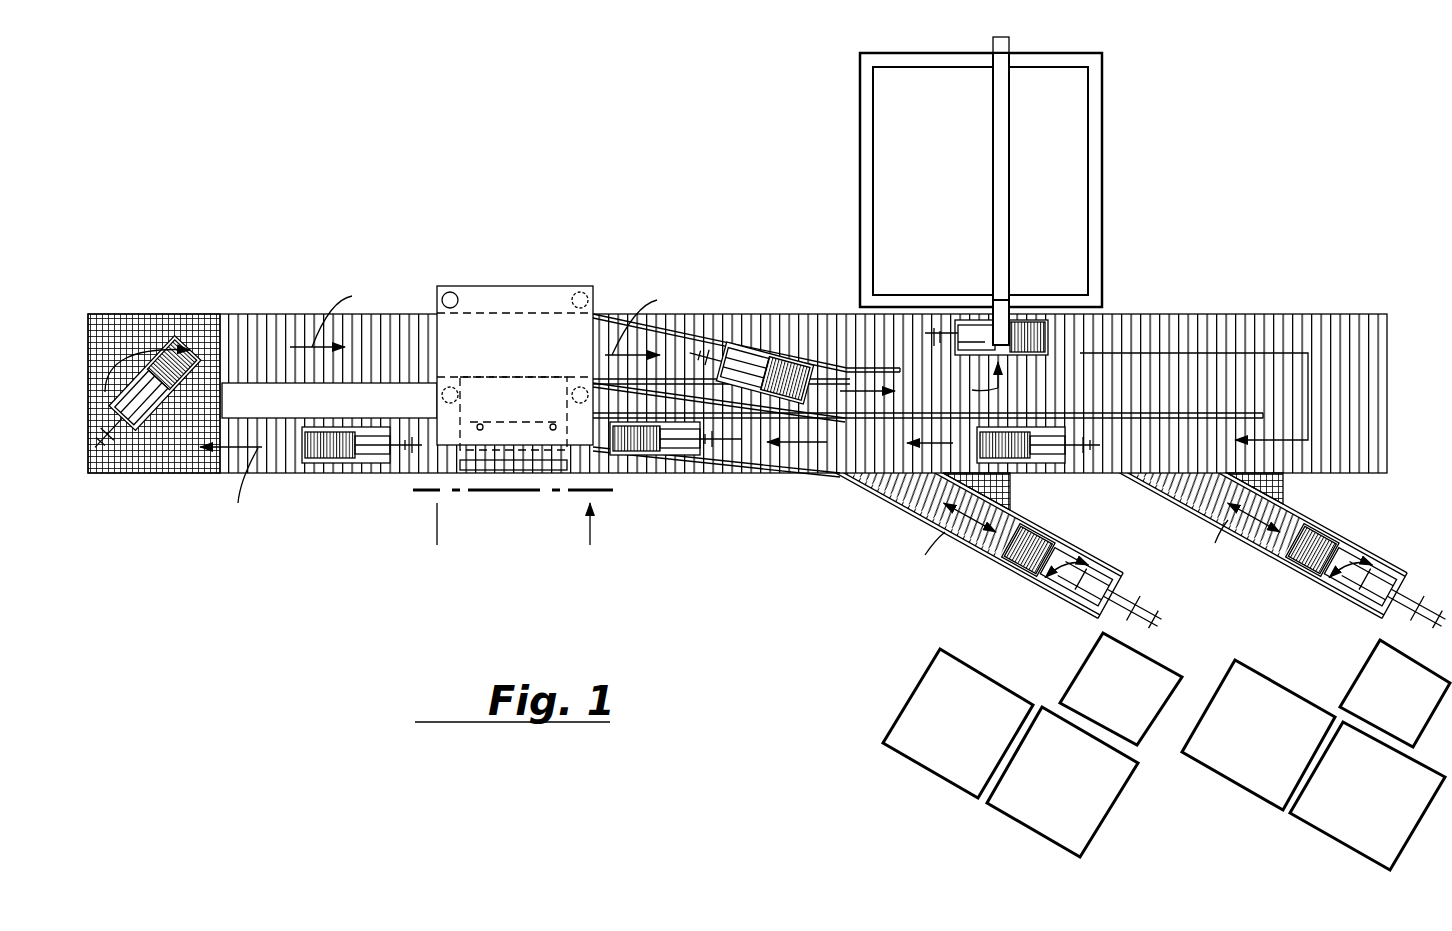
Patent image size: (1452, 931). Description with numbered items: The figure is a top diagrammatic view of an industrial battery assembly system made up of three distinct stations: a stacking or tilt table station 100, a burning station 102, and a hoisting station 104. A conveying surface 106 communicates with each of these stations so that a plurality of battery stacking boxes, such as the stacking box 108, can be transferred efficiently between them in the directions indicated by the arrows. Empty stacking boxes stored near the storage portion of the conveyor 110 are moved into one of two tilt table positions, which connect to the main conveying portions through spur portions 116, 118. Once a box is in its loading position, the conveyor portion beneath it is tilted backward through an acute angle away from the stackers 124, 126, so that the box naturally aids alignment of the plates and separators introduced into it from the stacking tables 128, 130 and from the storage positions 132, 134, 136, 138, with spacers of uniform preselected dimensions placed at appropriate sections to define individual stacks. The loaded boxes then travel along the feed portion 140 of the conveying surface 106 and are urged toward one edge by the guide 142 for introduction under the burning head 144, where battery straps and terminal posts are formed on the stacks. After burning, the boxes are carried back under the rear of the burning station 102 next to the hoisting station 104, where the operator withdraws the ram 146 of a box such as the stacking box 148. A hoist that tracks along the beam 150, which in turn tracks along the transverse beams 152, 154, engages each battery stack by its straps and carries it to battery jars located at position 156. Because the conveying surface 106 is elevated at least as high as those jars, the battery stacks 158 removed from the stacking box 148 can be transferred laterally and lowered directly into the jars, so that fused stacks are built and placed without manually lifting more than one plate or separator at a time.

The stacking or tilt table station 100 is at (767, 451).
The burning station 102 is at (515, 316).
The hoisting station 104 is at (1045, 189).
The conveying surface 106 is at (1215, 305).
The stacking box 108 is at (785, 360).
The storage portion of the conveyor 110 is at (1342, 350).
The spur portion 116 is at (1265, 525).
The spur portion 118 is at (983, 525).
The stacker 124 is at (1048, 652).
The stacker 126 is at (1322, 644).
The stacking table 128 is at (1140, 699).
The stacking table 130 is at (1408, 699).
The storage position 132 is at (975, 727).
The storage position 134 is at (1075, 781).
The storage position 136 is at (1273, 738).
The storage position 138 is at (1390, 792).
The feed portion 140 is at (870, 460).
The guide 142 is at (752, 456).
The burning head 144 is at (515, 420).
The ram 146 is at (948, 326).
The stacking box 148 is at (1046, 302).
The beam 150 is at (1001, 183).
The transverse beam 152 is at (916, 296).
The transverse beam 154 is at (932, 60).
The position of battery jars 156 is at (950, 142).
The battery stacks 158 is at (1022, 328).